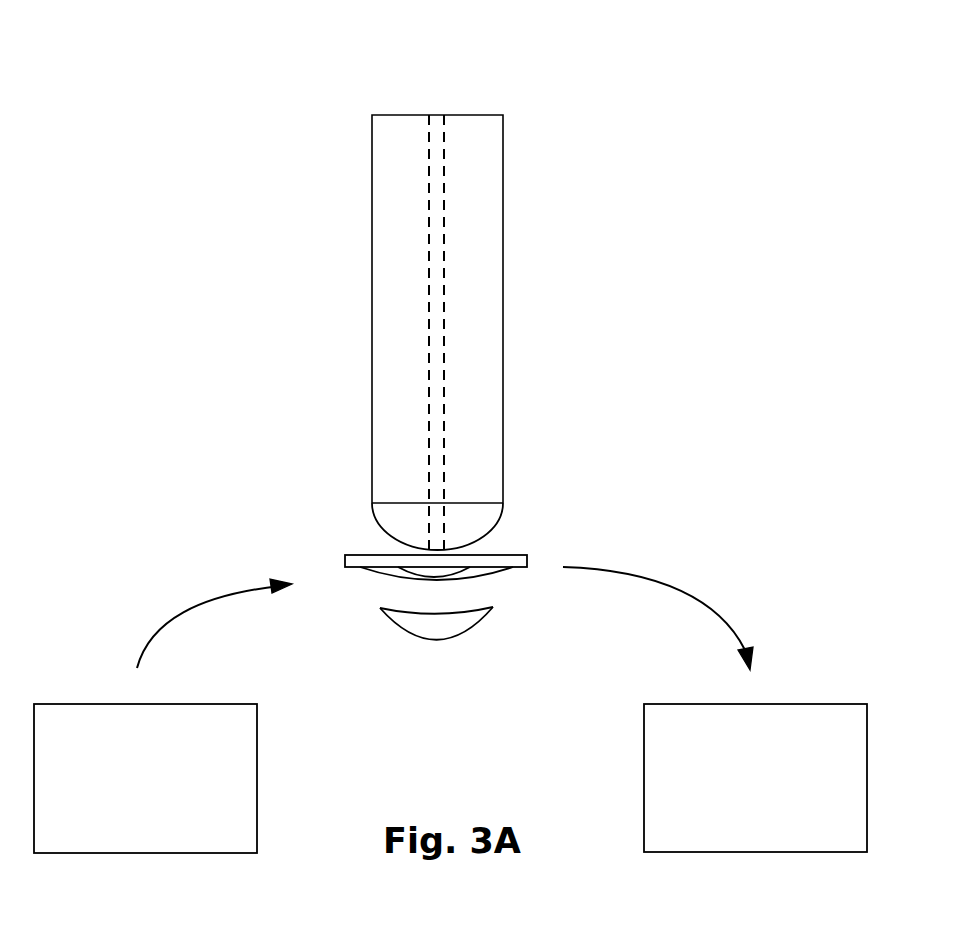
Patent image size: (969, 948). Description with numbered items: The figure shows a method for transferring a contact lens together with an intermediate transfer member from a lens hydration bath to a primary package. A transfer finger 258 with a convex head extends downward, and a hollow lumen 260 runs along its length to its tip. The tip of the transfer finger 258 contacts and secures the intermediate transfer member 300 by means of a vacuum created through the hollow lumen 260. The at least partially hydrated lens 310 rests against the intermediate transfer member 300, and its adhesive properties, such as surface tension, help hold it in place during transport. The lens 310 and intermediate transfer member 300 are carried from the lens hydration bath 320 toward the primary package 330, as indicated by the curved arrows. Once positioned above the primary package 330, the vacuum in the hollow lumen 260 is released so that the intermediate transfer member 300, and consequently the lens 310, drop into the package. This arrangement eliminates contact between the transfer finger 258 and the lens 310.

The transfer finger 258 is at (503, 325).
The hollow lumen 260 is at (433, 115).
The intermediate transfer member 300 is at (527, 560).
The lens 310 is at (438, 641).
The lens hydration bath 320 is at (124, 833).
The primary package 330 is at (733, 817).